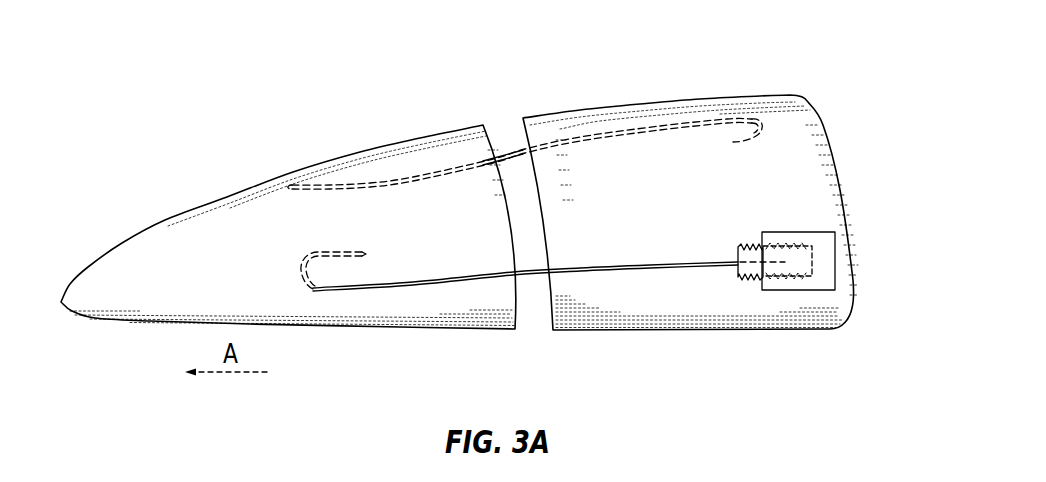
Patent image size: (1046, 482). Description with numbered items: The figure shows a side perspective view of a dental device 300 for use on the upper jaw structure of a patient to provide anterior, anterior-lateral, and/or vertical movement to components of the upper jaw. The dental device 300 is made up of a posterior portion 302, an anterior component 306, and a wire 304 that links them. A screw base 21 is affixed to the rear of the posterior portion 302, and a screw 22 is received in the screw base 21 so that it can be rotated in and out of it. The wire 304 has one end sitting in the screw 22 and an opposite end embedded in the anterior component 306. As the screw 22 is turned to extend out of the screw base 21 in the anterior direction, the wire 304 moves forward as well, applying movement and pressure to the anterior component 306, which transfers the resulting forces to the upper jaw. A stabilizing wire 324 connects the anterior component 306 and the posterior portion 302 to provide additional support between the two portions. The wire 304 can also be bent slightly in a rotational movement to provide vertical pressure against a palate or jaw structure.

The dental device 300 is at (781, 44).
The posterior portion 302 is at (805, 114).
The wire 304 is at (627, 263).
The anterior component 306 is at (121, 262).
The stabilizing wire 324 is at (437, 172).
The screw 22 is at (756, 246).
The screw base 21 is at (800, 232).